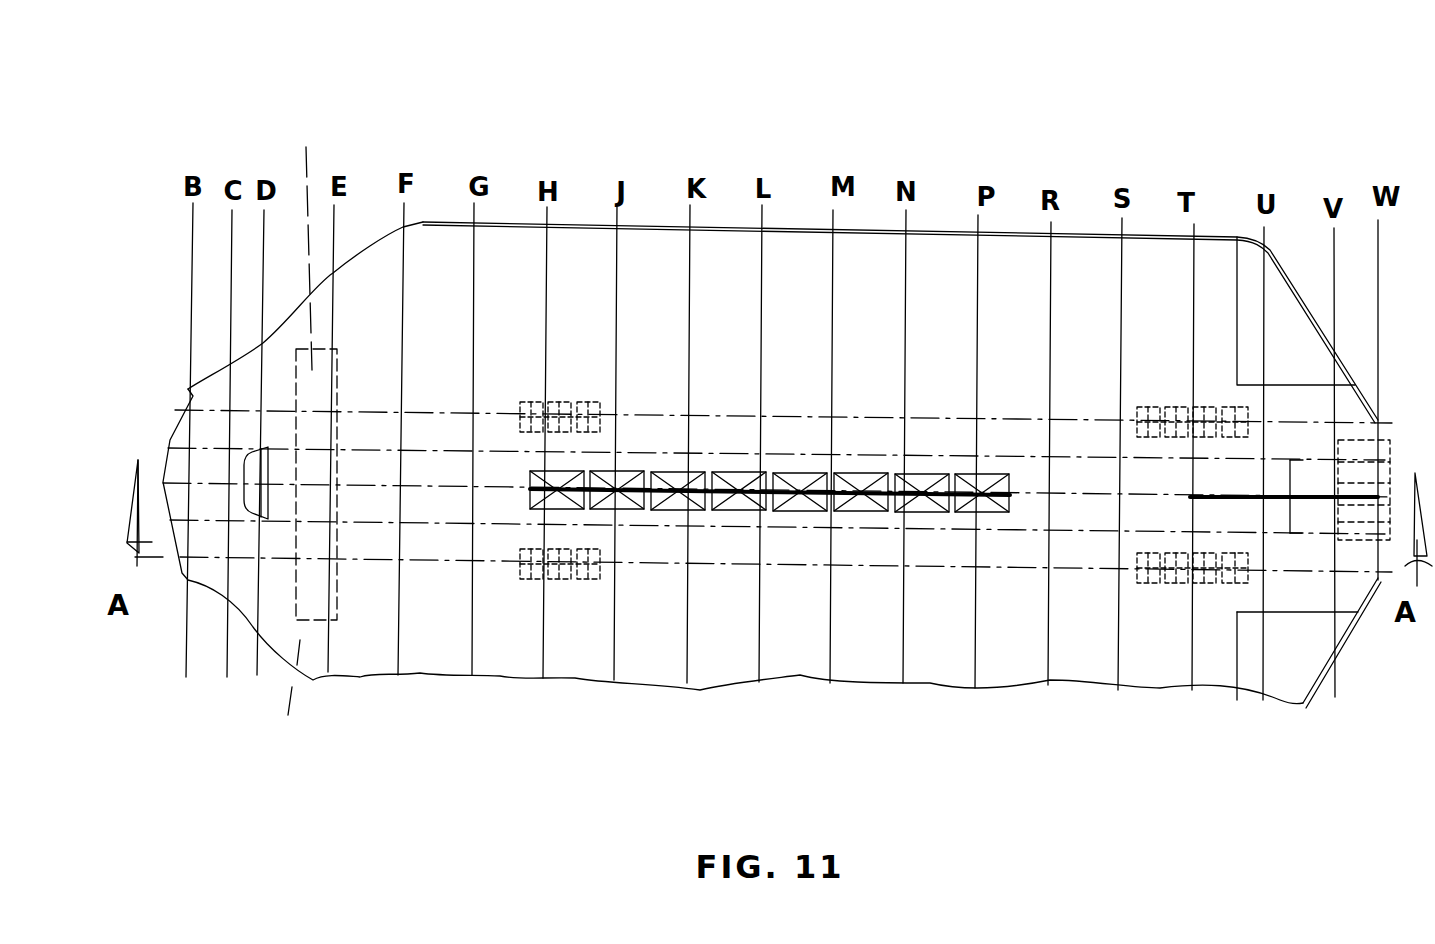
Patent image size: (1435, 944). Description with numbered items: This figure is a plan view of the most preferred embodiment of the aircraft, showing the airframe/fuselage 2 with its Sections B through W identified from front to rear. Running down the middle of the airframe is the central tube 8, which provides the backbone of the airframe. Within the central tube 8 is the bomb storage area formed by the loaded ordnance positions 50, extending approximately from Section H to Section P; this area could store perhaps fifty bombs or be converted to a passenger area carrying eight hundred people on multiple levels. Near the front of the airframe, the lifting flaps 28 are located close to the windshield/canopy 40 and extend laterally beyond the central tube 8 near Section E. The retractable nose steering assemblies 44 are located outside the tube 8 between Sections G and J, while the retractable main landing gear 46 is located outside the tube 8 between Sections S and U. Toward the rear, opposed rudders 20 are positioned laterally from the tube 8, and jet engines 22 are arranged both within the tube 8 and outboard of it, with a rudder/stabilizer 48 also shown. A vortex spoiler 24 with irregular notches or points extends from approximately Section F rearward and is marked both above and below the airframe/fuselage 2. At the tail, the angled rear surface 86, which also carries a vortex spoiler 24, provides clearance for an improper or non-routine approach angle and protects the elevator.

The airframe/fuselage 2 is at (472, 78).
The central tube 8 is at (415, 449).
The rudder 20 is at (1285, 310).
The jet engine 22 is at (1355, 515).
The vortex spoiler 24 is at (586, 225).
The lifting flaps 28 is at (303, 428).
The windshield/canopy 40 is at (253, 504).
The retractable nose steering assembly 44 is at (521, 434).
The retractable main landing gear 46 is at (1172, 438).
The rudder/stabilizer 48 is at (1223, 492).
The loaded ordnance positions 50 is at (879, 512).
The angled rear surface 86 is at (1355, 625).